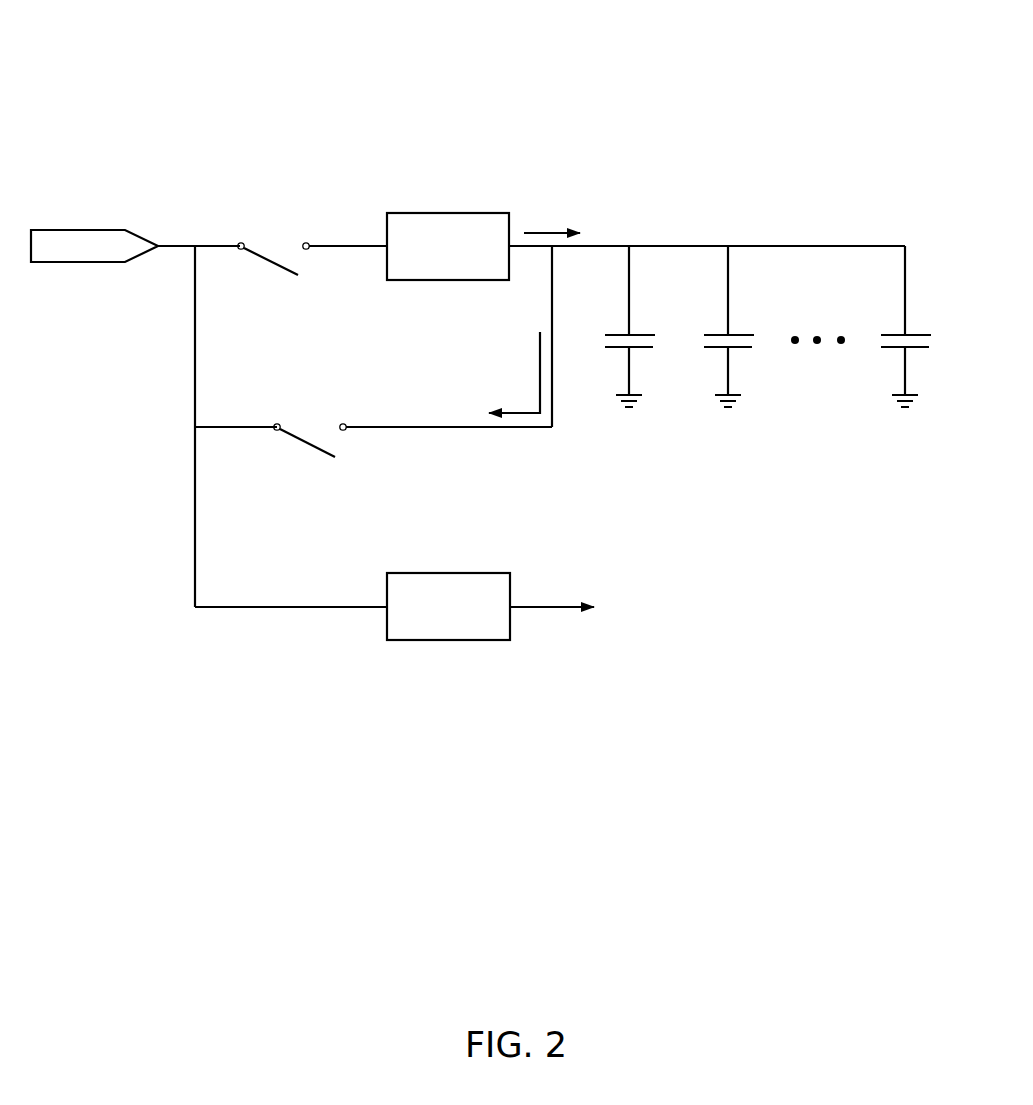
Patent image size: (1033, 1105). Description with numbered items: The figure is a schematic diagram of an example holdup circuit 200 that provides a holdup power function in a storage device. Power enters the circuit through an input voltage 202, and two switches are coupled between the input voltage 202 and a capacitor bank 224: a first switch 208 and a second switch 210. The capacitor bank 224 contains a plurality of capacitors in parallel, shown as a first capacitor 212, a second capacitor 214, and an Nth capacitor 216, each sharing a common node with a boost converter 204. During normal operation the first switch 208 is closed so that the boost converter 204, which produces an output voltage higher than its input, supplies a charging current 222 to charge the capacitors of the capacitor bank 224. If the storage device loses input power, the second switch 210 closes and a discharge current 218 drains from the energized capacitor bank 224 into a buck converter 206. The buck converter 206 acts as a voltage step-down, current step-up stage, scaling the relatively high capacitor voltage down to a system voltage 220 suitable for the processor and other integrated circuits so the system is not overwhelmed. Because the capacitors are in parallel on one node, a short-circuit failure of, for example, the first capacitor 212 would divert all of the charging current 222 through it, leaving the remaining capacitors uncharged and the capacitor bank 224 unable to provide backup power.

The holdup circuit 200 is at (126, 72).
The input voltage 202 is at (109, 230).
The boost converter 204 is at (475, 213).
The buck converter 206 is at (473, 573).
The first switch 208 is at (272, 222).
The second switch 210 is at (313, 400).
The first capacitor 212 is at (614, 335).
The second capacitor 214 is at (714, 335).
The Nth capacitor 216 is at (891, 335).
The discharge current 218 is at (517, 412).
The system voltage 220 is at (557, 607).
The charging current 222 is at (555, 232).
The capacitor bank 224 is at (812, 194).